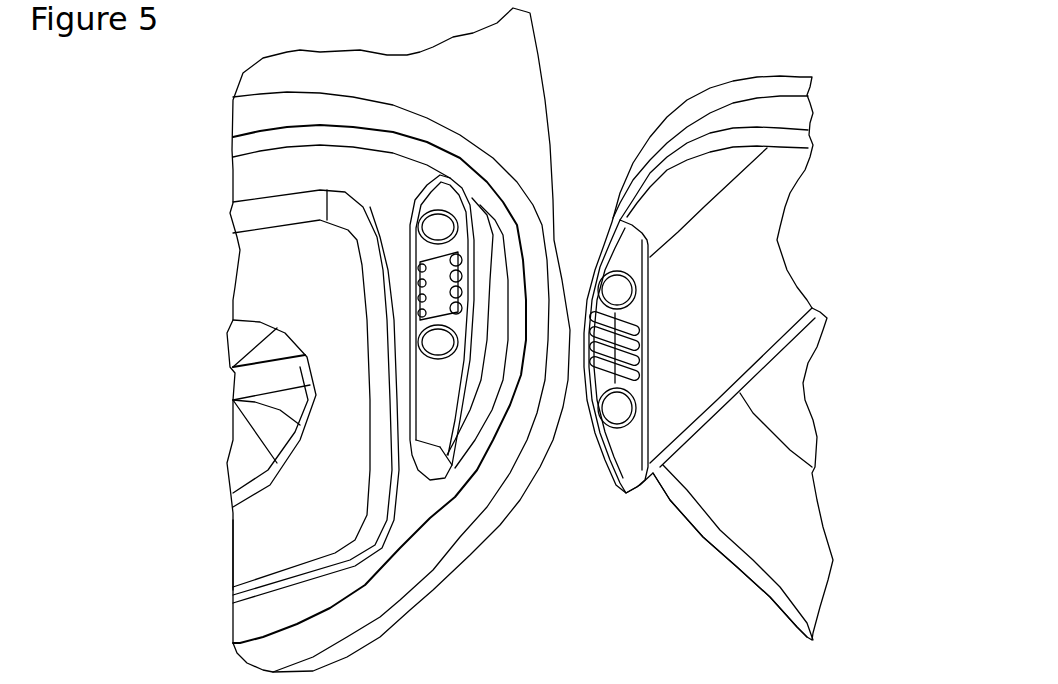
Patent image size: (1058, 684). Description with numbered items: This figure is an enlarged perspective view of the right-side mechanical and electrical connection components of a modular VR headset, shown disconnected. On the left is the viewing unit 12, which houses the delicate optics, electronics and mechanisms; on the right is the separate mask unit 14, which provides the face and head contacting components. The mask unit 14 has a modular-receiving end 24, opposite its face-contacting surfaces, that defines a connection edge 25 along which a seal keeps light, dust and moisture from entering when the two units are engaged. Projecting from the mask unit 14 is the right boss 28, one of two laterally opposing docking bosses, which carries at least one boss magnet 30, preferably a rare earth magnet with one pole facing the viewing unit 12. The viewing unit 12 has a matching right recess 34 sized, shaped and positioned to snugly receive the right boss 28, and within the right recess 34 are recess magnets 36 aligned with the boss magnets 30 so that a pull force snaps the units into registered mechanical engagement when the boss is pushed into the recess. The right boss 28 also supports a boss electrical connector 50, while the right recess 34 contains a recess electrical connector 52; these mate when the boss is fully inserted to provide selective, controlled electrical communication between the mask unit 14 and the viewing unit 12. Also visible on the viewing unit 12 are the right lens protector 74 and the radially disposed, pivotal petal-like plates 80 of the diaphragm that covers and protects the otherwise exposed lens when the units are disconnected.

The viewing unit 12 is at (150, 181).
The mask unit 14 is at (862, 209).
The modular-receiving end 24 is at (760, 115).
The connection edge 25 is at (780, 607).
The right boss 28 is at (757, 325).
The boss magnet 30 is at (615, 413).
The right recess 34 is at (447, 417).
The recess magnet 36 is at (437, 228).
The boss electrical connector 50 is at (647, 361).
The recess electrical connector 52 is at (435, 283).
The right lens protector 74 is at (248, 557).
The petal-like plates 80 is at (245, 423).